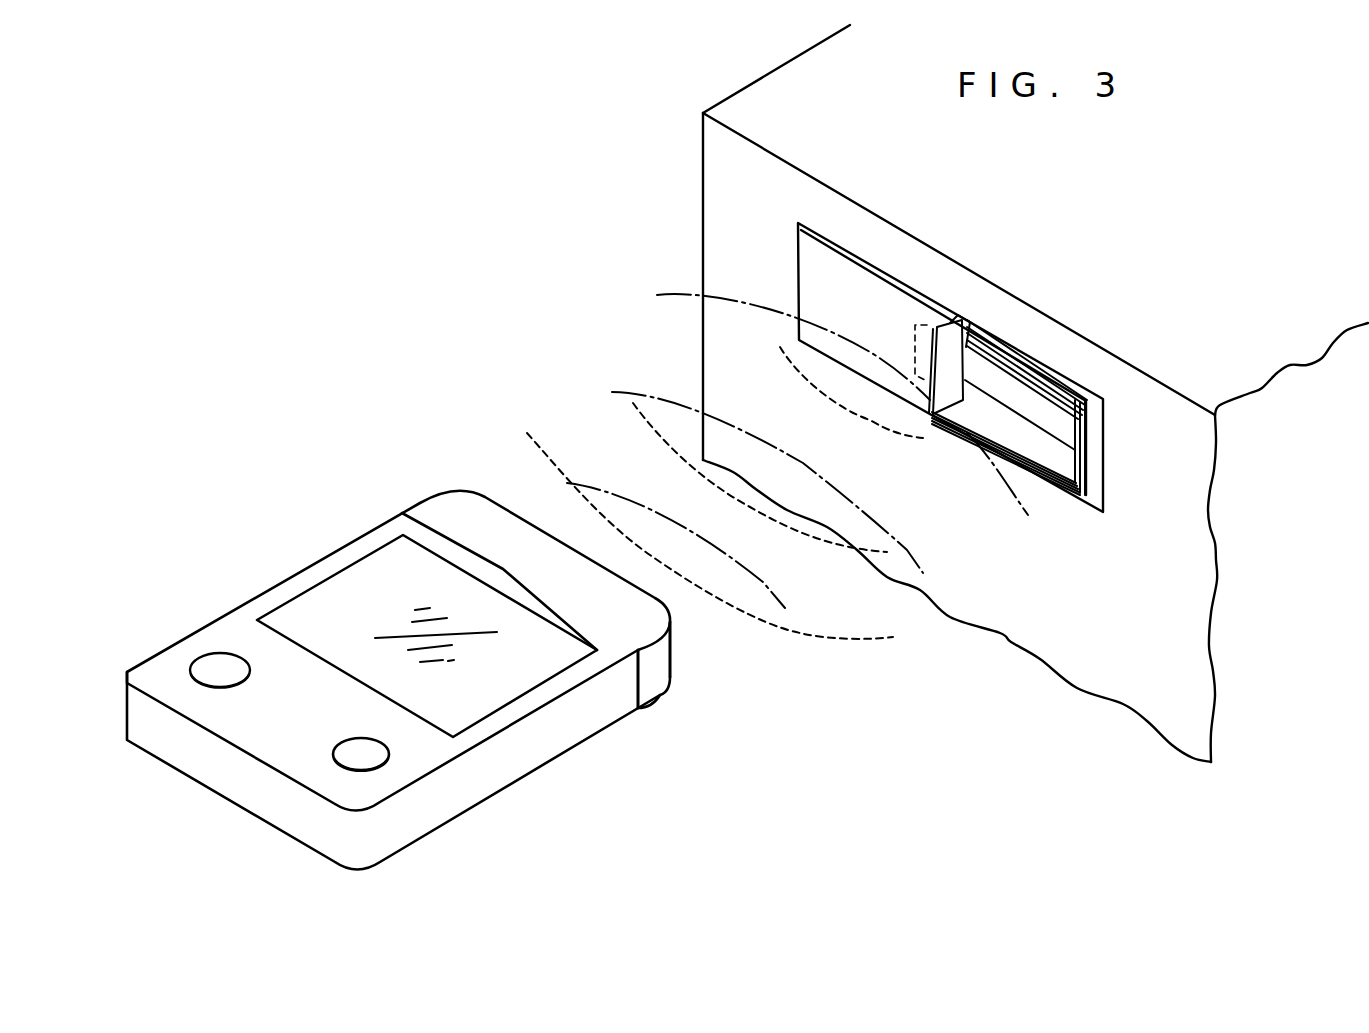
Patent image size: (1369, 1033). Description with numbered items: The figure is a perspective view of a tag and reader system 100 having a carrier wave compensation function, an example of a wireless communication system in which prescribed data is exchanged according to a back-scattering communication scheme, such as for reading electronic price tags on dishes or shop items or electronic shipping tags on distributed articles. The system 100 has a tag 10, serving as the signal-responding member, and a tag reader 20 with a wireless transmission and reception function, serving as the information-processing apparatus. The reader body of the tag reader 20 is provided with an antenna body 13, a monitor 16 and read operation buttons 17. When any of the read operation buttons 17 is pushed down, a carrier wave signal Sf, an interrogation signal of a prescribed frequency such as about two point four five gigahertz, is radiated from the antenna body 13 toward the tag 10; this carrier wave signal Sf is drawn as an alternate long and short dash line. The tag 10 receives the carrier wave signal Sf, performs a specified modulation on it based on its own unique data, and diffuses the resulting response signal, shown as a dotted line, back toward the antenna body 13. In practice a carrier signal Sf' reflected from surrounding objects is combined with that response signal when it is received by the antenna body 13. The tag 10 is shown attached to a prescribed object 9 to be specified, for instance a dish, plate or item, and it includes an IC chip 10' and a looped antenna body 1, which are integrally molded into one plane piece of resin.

The tag and reader system 100 is at (330, 170).
The object to be specified 9 is at (1164, 708).
The tag 10 is at (848, 311).
The IC chip 10' is at (1002, 328).
The looped antenna body 1 is at (1068, 490).
The carrier wave signal Sf is at (797, 414).
The reflected carrier signal Sf' is at (778, 449).
The tag reader 20 is at (542, 767).
The antenna body 13 is at (665, 660).
The monitor 16 is at (343, 580).
The read operation buttons 17 is at (212, 663).